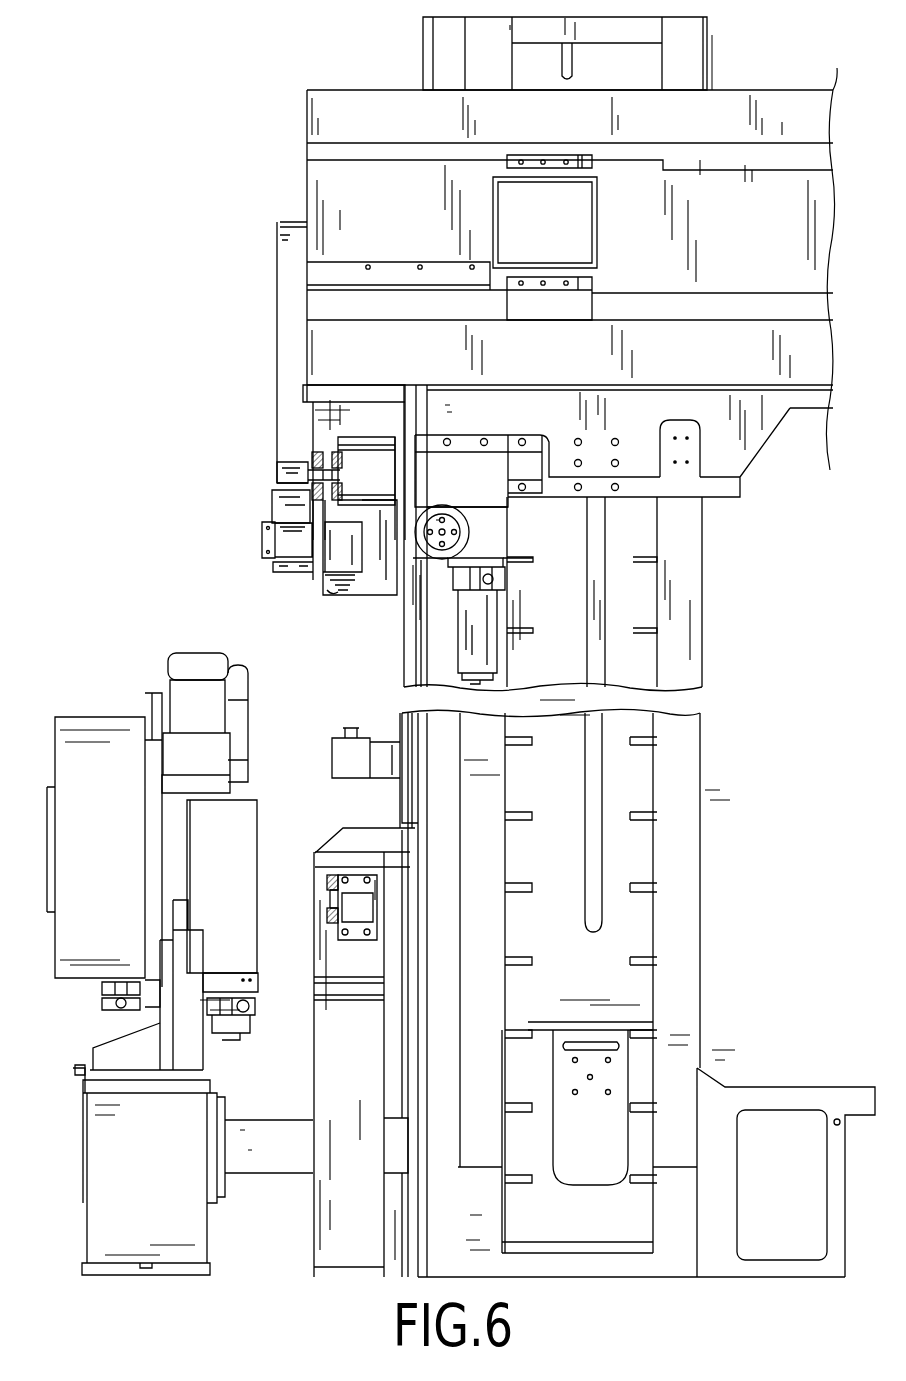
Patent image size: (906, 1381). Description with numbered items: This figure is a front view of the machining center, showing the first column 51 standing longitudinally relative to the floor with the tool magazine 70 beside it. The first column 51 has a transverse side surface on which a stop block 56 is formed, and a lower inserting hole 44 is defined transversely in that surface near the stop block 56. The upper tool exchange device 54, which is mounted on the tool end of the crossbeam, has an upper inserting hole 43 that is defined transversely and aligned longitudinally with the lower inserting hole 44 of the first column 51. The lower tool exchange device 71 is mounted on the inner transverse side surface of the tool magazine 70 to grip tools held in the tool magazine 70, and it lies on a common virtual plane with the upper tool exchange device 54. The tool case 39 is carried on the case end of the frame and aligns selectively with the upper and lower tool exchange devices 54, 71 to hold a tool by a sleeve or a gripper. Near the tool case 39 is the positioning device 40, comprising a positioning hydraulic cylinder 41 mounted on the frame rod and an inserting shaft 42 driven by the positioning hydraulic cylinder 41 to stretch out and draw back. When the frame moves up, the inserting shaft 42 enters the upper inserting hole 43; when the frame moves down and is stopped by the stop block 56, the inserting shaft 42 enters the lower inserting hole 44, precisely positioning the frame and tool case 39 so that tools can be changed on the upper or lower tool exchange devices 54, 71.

The tool case 39 is at (330, 586).
The positioning device 40 is at (275, 487).
The positioning hydraulic cylinder 41 is at (292, 470).
The inserting shaft 42 is at (315, 472).
The upper inserting hole 43 is at (343, 478).
The lower inserting hole 44 is at (330, 893).
The first column 51 is at (642, 854).
The upper tool exchange device 54 is at (490, 626).
The stop block 56 is at (352, 755).
The tool magazine 70 is at (101, 709).
The lower tool exchange device 71 is at (265, 1004).